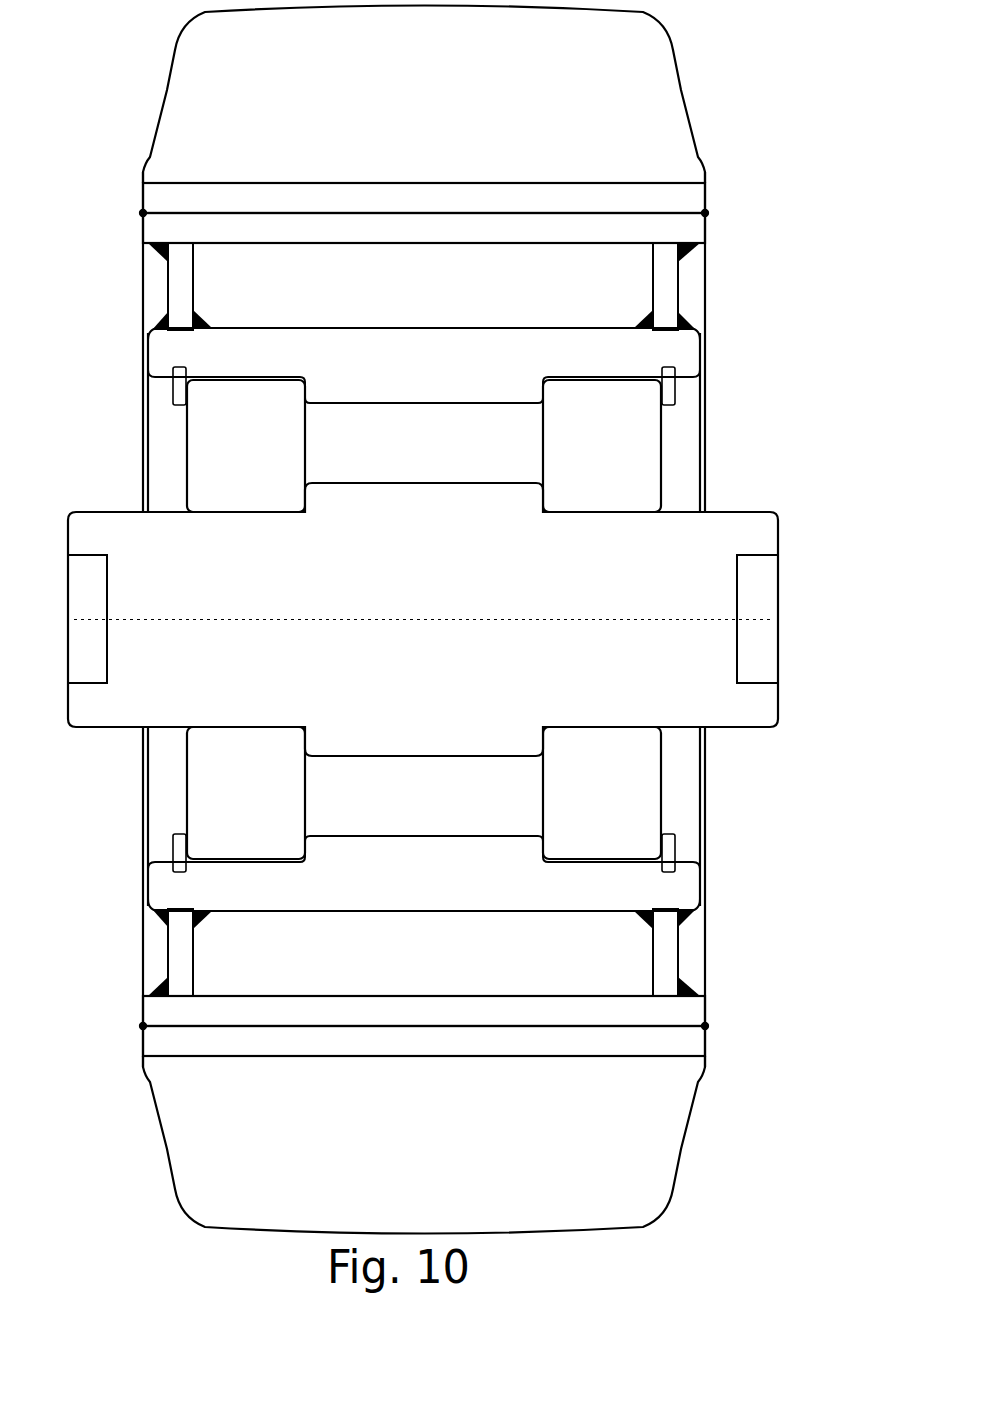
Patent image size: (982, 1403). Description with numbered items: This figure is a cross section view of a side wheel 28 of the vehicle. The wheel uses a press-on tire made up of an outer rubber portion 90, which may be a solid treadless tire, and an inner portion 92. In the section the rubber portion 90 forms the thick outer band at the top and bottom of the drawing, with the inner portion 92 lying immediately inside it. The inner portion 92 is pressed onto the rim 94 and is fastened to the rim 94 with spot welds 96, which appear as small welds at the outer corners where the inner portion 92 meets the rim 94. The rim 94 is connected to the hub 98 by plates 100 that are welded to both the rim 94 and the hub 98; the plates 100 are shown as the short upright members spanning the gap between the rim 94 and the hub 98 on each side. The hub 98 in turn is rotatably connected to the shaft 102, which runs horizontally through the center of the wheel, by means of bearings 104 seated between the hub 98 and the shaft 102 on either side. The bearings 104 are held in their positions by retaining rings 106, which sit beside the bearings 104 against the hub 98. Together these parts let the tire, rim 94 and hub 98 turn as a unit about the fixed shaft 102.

The side wheel 28 is at (768, 272).
The rubber portion 90 is at (162, 116).
The inner portion 92 is at (143, 195).
The rim 94 is at (143, 223).
The spot welds 96 is at (708, 210).
The hub 98 is at (143, 353).
The plates 100 is at (168, 289).
The shaft 102 is at (780, 537).
The bearings 104 is at (660, 450).
The retaining rings 106 is at (676, 392).